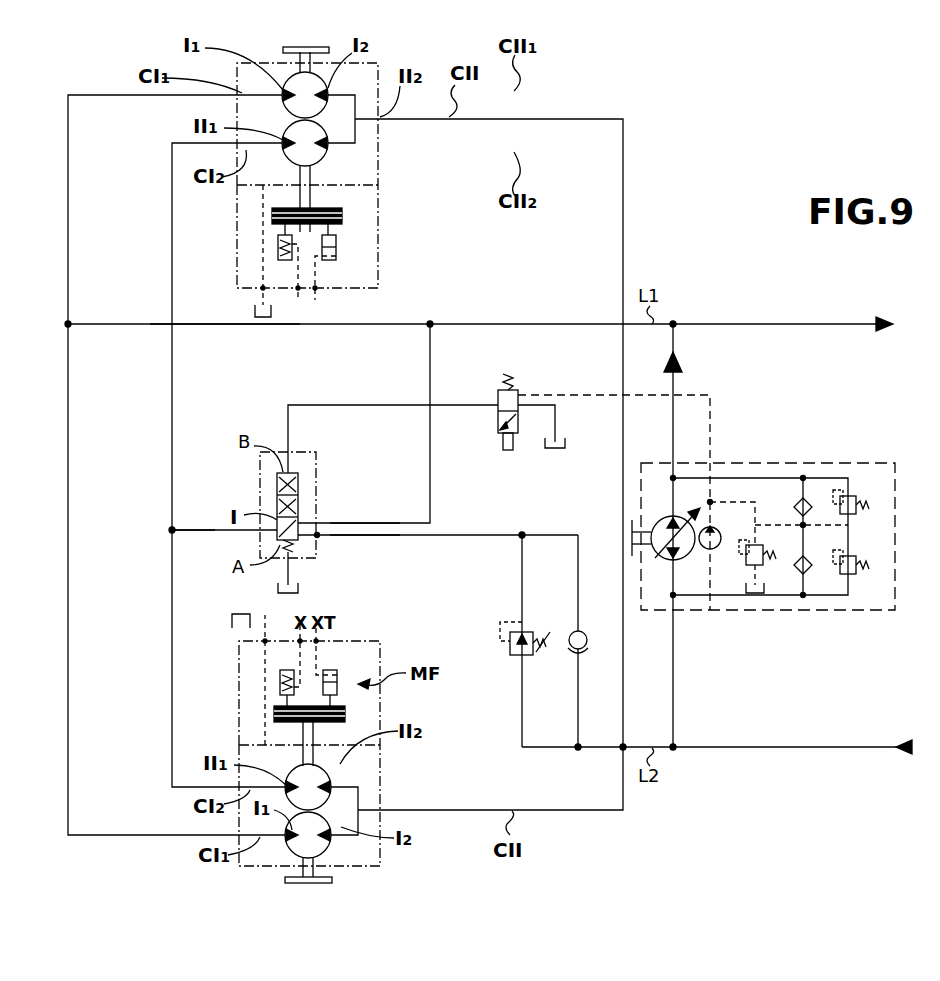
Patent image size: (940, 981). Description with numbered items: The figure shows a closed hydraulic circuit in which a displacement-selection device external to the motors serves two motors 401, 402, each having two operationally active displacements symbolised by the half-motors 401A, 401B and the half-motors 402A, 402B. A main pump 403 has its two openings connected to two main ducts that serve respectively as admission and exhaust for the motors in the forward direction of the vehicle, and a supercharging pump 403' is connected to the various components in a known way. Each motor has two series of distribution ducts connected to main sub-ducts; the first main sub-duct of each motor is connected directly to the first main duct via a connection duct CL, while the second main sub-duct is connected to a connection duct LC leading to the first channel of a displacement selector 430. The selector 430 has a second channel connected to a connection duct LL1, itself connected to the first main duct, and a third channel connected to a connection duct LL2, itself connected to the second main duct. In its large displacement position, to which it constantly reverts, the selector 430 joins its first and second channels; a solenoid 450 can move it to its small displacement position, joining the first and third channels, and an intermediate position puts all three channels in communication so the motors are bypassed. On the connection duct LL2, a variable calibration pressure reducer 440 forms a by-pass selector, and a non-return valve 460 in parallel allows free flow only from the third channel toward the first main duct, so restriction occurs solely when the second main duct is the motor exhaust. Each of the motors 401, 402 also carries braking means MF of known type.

The motor 401 is at (380, 63).
The half-motor 401A is at (290, 76).
The half-motor 401B is at (327, 152).
The motor 402 is at (378, 790).
The half-motor 402A is at (335, 850).
The half-motor 402B is at (292, 762).
The main pump 403 is at (763, 520).
The supercharging pump 403' is at (733, 488).
The displacement selector 430 is at (277, 490).
The variable calibration pressure reducer 440 is at (512, 662).
The solenoid 450 is at (498, 425).
The non-return valve 460 is at (588, 645).
The braking means MF is at (358, 240).
The connection duct CL is at (217, 327).
The connection duct LC is at (210, 530).
The connection duct LL1 is at (362, 524).
The connection duct LL2 is at (362, 536).